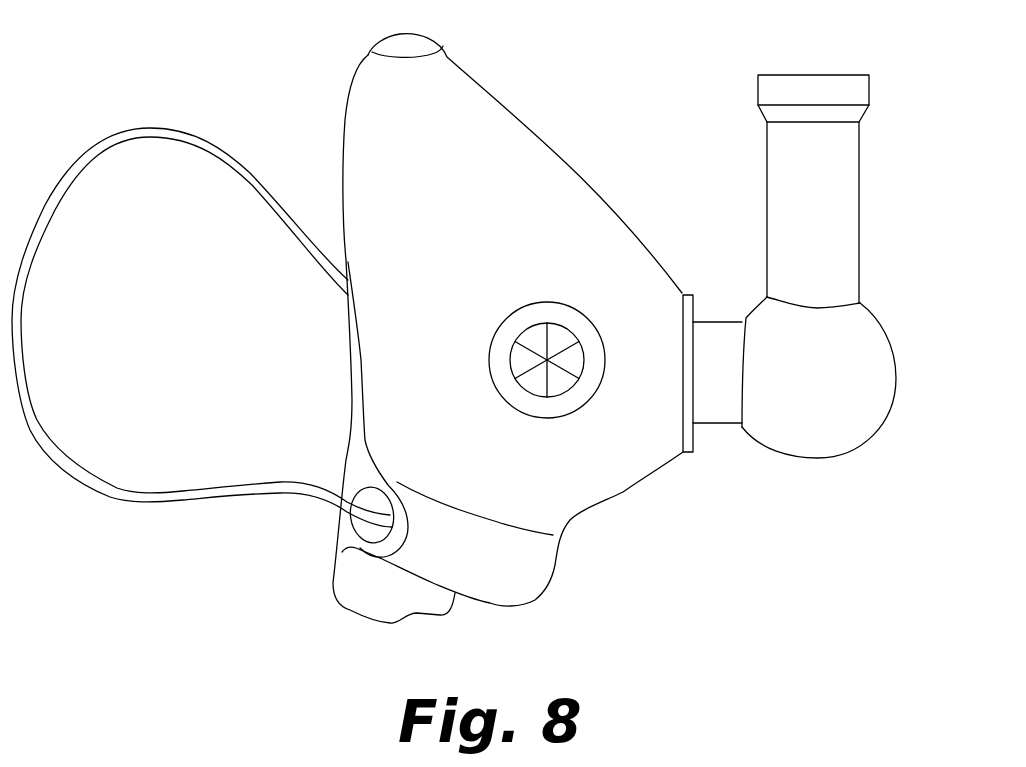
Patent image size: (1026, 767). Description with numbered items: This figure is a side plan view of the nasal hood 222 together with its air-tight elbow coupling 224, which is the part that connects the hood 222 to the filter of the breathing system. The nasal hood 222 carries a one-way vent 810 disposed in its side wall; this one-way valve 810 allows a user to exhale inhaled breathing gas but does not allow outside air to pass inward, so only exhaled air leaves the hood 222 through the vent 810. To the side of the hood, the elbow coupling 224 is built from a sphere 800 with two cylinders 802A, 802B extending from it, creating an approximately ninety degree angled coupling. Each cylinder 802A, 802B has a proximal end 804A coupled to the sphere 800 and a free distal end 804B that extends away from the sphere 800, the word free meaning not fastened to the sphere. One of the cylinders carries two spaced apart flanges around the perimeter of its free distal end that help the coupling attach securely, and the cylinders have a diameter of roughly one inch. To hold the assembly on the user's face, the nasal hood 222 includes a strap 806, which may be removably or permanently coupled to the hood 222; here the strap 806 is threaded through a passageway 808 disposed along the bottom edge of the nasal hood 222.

The nasal hood 222 is at (513, 328).
The elbow coupling 224 is at (802, 290).
The sphere 800 is at (857, 397).
The cylinder 802A is at (713, 405).
The cylinder 802B is at (790, 220).
The proximal end 804A is at (818, 303).
The free distal end 804B is at (814, 124).
The strap 806 is at (128, 127).
The passageway 808 is at (363, 527).
The one-way vent 810 is at (533, 315).